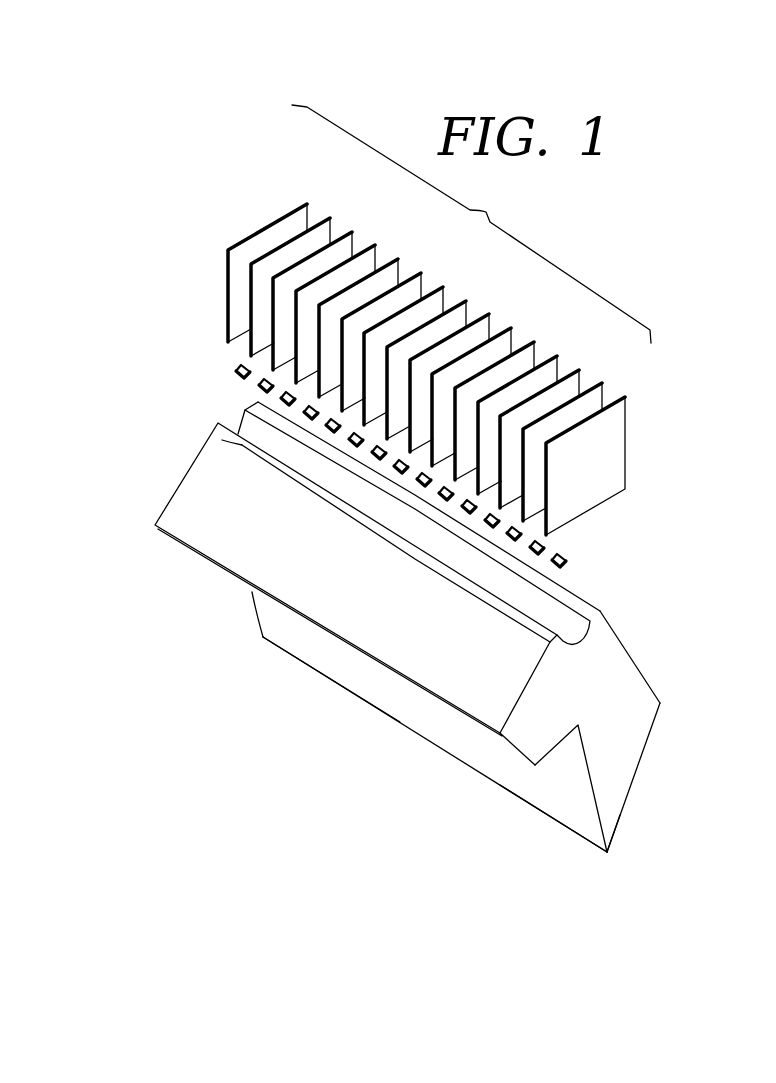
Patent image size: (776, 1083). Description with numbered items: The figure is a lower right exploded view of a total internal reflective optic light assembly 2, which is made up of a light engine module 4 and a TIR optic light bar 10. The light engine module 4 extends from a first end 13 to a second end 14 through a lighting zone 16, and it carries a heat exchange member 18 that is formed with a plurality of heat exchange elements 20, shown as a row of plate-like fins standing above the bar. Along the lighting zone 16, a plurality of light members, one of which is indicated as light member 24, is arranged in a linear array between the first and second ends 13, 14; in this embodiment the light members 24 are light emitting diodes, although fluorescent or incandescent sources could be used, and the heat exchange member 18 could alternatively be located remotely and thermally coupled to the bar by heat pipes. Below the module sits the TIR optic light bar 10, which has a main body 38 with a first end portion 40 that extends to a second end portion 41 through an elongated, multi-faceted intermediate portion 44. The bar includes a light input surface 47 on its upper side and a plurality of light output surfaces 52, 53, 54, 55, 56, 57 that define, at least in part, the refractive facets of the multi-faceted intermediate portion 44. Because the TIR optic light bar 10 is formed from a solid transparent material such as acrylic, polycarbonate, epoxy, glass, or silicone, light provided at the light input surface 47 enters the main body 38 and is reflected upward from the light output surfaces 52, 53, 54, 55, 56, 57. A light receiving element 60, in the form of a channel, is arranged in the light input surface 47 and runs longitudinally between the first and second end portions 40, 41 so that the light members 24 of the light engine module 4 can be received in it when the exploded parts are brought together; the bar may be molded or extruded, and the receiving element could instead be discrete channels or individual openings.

The total internal reflective (TIR) optic light assembly 2 is at (439, 557).
The light engine module 4 is at (423, 390).
The TIR optic light bar 10 is at (439, 656).
The first end 13 is at (228, 318).
The second end 14 is at (572, 527).
The lighting zone 16 is at (231, 383).
The heat exchange member 18 is at (605, 355).
The heat exchange elements 20 is at (452, 308).
The light member 24 is at (579, 575).
The main body 38 is at (304, 649).
The first end portion 40 is at (257, 610).
The second end portion 41 is at (627, 708).
The multi-faceted intermediate portion 44 is at (392, 694).
The light input surface 47 is at (213, 433).
The light output surface 52 is at (190, 512).
The light output surface 53 is at (468, 730).
The light output surface 54 is at (558, 748).
The light output surface 55 is at (568, 800).
The light output surface 56 is at (621, 838).
The light output surface 57 is at (642, 671).
The light receiving element 60 is at (472, 560).